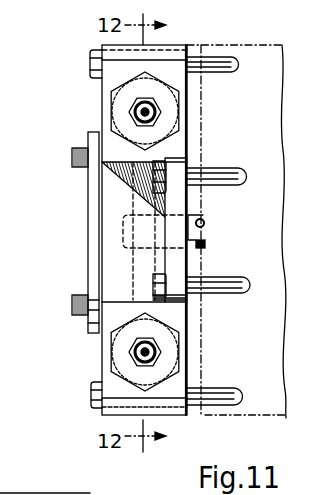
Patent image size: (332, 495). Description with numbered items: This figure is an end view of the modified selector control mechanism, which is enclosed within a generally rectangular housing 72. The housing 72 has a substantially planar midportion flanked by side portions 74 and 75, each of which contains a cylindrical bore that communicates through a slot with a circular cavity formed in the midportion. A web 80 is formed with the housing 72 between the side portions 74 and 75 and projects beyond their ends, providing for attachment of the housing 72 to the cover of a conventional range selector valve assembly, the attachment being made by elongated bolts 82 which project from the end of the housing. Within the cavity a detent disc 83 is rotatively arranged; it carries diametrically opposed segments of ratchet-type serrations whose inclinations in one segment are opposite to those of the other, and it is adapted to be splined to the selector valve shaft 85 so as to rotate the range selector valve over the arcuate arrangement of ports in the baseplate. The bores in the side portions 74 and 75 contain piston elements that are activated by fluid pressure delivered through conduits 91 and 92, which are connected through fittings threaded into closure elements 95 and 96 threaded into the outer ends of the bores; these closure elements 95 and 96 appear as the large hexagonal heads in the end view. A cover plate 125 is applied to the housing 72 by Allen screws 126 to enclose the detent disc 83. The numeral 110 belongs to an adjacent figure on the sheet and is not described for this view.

The housing 72 is at (193, 47).
The side portion 74 is at (102, 87).
The side portion 75 is at (101, 380).
The web 80 is at (179, 262).
The elongated bolts 82 is at (222, 72).
The detent disc 83 is at (132, 272).
The selector valve shaft 85 is at (205, 225).
The conduit 91 is at (148, 107).
The conduit 92 is at (140, 348).
The closure element 95 is at (176, 122).
The closure element 96 is at (170, 341).
The adjacent figure element 110 is at (45, 484).
The cover plate 125 is at (88, 224).
The Allen screws 126 is at (72, 158).